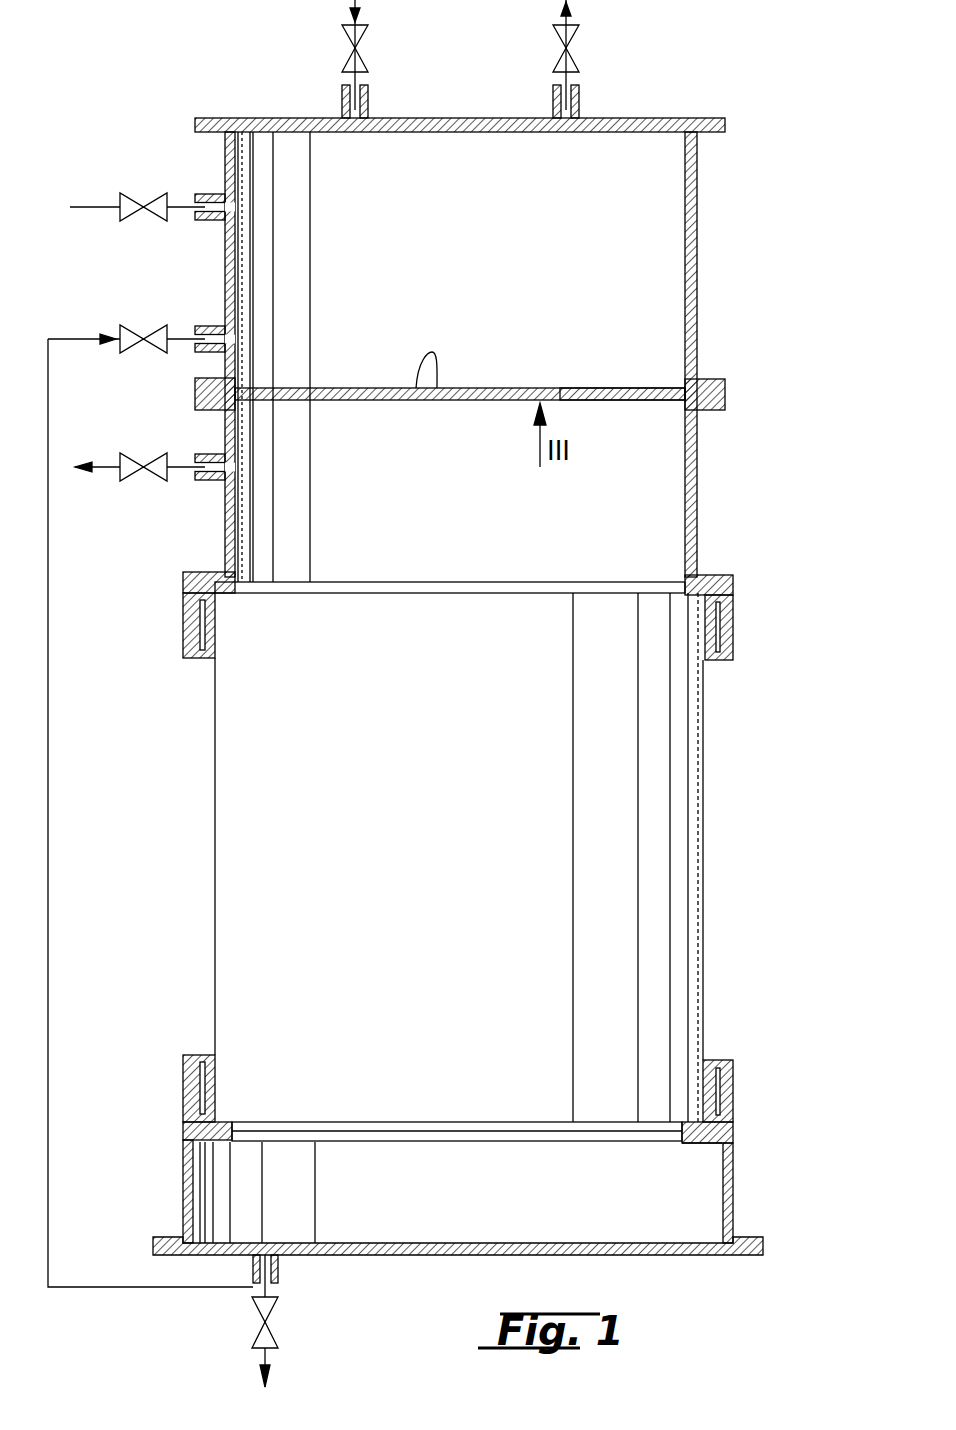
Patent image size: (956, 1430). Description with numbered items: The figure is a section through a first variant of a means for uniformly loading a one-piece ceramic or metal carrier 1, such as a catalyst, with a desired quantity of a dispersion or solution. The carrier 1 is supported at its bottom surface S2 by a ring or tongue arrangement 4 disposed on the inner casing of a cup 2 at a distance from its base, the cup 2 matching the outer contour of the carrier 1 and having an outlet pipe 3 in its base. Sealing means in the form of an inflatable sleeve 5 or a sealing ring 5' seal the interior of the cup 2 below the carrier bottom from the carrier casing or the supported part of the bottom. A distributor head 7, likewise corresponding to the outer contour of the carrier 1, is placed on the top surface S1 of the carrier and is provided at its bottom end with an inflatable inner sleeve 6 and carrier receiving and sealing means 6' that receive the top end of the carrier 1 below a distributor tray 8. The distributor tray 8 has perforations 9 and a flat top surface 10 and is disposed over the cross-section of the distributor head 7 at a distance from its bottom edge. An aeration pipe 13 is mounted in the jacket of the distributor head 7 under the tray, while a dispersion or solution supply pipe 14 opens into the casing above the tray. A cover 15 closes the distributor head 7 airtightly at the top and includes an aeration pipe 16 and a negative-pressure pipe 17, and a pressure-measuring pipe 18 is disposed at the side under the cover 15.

The carrier 1 is at (685, 823).
The cup 2 is at (735, 1190).
The outlet pipe 3 is at (280, 1272).
The ring or tongue arrangement 4 is at (693, 1148).
The inflatable sleeve 5 is at (484, 1088).
The sealing ring 5' is at (487, 1104).
The inflatable inner sleeve 6 is at (482, 626).
The carrier receiving and sealing means 6' is at (487, 601).
The distributor head 7 is at (700, 283).
The distributor tray 8 is at (515, 388).
The perforations 9 is at (428, 359).
The top surface 10 is at (593, 388).
The aeration pipe 13 is at (205, 452).
The dispersion or solution supply pipe 14 is at (205, 325).
The cover 15 is at (650, 118).
The aeration pipe 16 is at (368, 100).
The negative-pressure pipe 17 is at (579, 100).
The pressure-measuring pipe 18 is at (205, 192).
The top surface of the carrier S1 is at (355, 582).
The bottom surface of the carrier S2 is at (417, 1125).